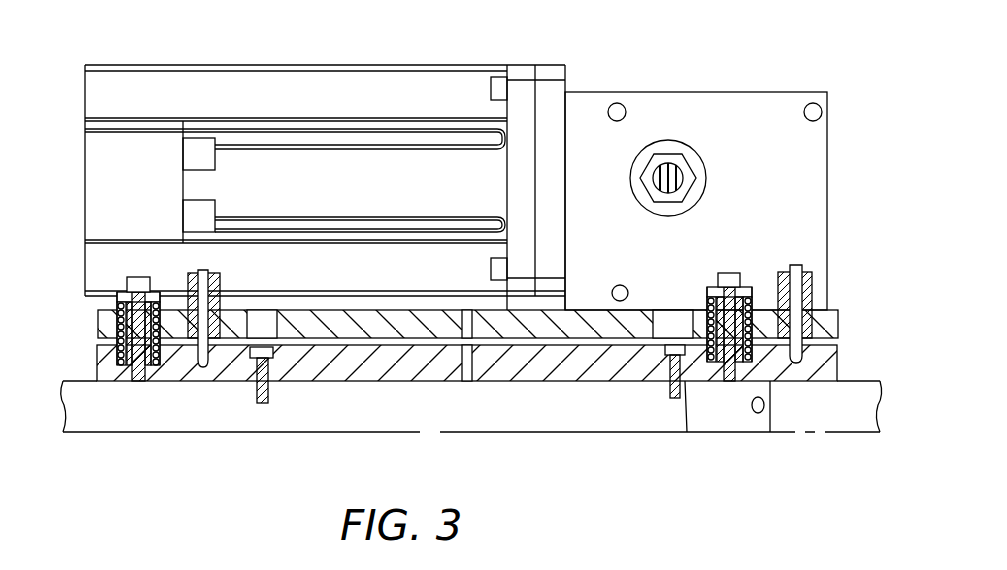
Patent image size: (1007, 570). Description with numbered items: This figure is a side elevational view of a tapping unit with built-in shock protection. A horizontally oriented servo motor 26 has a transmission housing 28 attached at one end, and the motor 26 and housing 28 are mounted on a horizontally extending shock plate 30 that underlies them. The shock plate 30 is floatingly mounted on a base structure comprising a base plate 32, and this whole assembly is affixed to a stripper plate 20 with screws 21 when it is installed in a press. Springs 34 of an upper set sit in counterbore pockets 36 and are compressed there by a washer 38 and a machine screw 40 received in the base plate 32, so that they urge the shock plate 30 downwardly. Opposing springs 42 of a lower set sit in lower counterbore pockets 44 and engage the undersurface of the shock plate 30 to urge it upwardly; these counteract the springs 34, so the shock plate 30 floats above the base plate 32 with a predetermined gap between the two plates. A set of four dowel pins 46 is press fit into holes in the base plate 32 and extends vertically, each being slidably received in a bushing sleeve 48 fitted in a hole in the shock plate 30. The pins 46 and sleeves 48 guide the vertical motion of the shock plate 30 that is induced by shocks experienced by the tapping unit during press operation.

The stripper plate 20 is at (427, 432).
The screws 21 is at (267, 403).
The servo motor 26 is at (377, 64).
The transmission housing 28 is at (667, 92).
The shock plate 30 is at (577, 314).
The base plate 32 is at (815, 367).
The springs 34 is at (118, 310).
The counterbore pockets 36 is at (138, 297).
The washer 38 is at (115, 300).
The machine screw 40 is at (145, 273).
The springs 42 is at (111, 383).
The lower counterbore pockets 44 is at (150, 380).
The dowel pins 46 is at (207, 270).
The bushing sleeves 48 is at (219, 297).